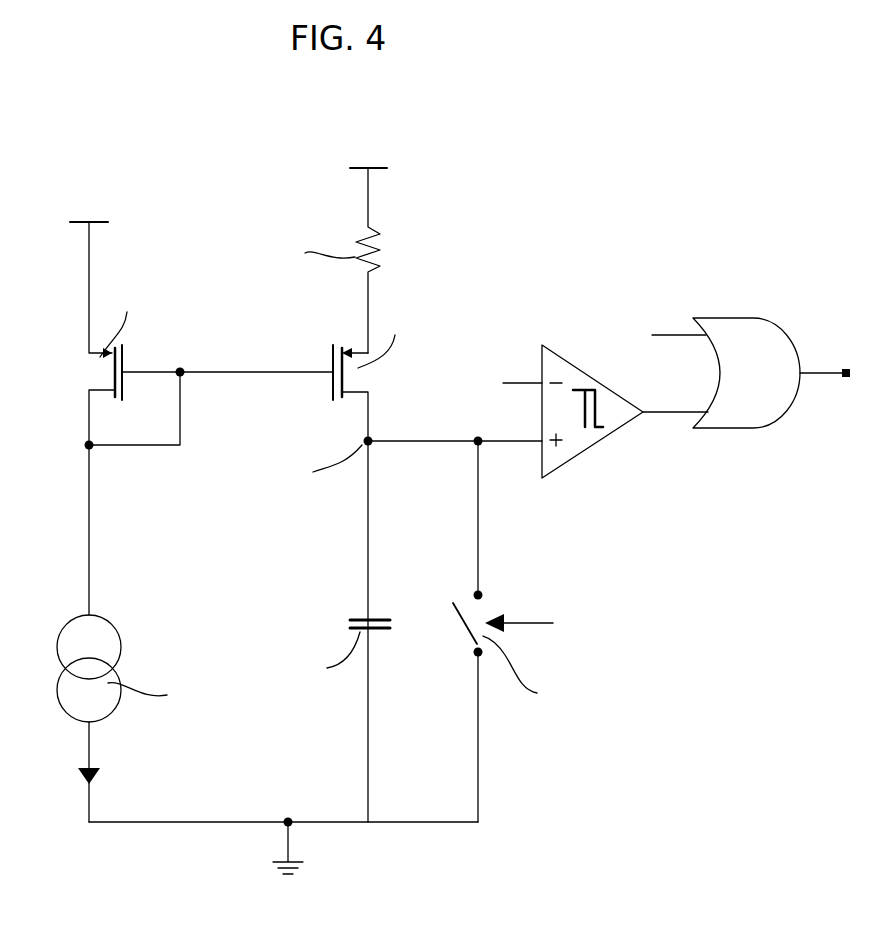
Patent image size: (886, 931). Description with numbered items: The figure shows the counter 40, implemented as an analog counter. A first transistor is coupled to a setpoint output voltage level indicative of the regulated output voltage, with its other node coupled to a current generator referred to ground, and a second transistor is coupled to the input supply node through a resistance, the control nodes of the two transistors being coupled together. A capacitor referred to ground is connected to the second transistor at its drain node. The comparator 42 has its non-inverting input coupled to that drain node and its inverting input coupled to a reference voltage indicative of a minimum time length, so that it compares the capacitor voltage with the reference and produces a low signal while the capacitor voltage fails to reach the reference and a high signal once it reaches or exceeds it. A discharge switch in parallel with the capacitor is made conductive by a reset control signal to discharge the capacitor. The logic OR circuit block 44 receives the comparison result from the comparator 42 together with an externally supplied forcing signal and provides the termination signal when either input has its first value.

The counter 40 is at (633, 192).
The comparator 42 is at (570, 445).
The logic OR circuit block 44 is at (765, 338).